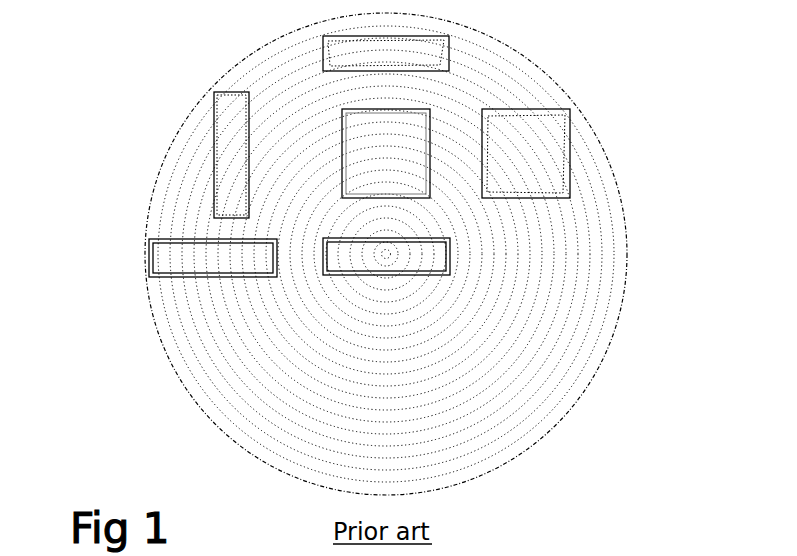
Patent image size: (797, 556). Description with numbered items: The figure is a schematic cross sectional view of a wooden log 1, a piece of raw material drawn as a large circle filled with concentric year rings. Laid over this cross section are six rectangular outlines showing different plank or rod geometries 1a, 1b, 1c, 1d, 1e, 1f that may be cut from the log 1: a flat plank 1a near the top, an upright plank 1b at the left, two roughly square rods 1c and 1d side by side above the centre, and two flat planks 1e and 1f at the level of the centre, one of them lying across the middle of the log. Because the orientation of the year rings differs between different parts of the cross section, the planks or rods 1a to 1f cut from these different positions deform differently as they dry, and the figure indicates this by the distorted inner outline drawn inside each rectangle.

The wooden log 1 is at (577, 305).
The plank or rod geometry 1a is at (438, 60).
The plank or rod geometry 1b is at (227, 182).
The plank or rod geometry 1c is at (367, 157).
The plank or rod geometry 1d is at (550, 153).
The plank or rod geometry 1e is at (190, 254).
The plank or rod geometry 1f is at (380, 262).